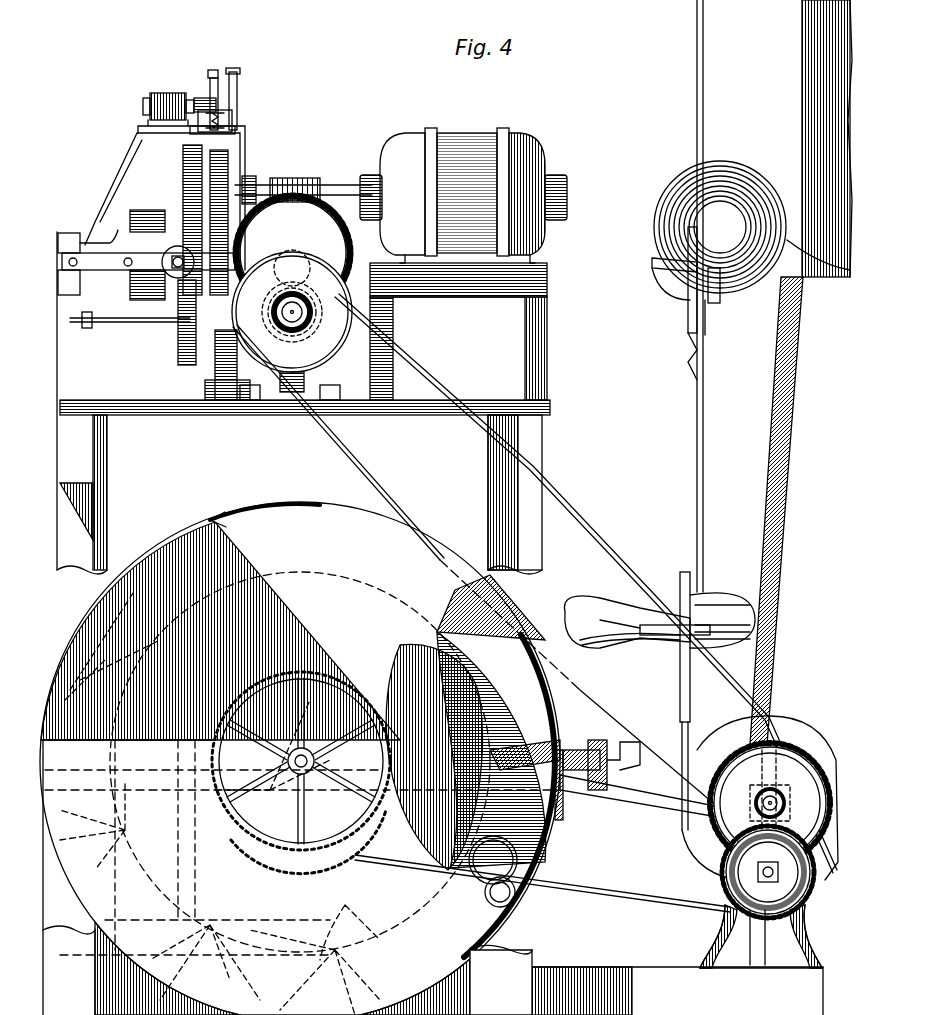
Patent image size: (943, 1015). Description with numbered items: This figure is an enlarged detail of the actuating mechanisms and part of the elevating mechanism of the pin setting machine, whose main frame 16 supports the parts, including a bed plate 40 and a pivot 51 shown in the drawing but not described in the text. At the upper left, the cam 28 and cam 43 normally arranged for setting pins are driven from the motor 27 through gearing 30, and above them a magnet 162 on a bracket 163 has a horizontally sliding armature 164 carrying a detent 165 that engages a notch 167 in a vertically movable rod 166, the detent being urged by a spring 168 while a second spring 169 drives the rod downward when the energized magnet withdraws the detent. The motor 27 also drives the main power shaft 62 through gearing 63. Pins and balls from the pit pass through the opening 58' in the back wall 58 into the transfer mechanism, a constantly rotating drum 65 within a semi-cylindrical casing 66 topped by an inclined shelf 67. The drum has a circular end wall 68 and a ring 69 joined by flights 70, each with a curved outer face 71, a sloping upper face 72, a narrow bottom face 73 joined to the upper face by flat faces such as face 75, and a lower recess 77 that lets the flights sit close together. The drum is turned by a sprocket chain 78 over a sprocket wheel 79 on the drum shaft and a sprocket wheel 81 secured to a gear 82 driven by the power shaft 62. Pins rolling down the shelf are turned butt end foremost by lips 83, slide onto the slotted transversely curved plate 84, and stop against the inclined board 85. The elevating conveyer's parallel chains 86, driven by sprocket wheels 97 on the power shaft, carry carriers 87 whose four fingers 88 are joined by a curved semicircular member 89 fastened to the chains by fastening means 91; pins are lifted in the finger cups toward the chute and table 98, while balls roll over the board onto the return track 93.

The main frame 16 is at (525, 747).
The motor 27 is at (520, 165).
The cam 28 is at (183, 178).
The gearing 30 is at (600, 618).
The bed plate 40 is at (205, 415).
The cam 43 is at (230, 185).
The pivot 51 is at (172, 278).
The back wall 58 is at (302, 802).
The opening 58' is at (322, 924).
The main power shaft 62 is at (772, 795).
The gearing 63 is at (590, 537).
The drum 65 is at (300, 758).
The semi-cylindrical casing 66 is at (148, 572).
The inclined shelf 67 is at (600, 779).
The circular end wall 68 is at (301, 777).
The ring 69 is at (347, 185).
The flights 70 is at (400, 537).
The outer face 71 is at (520, 640).
The upper face 72 is at (581, 771).
The bottom face 73 is at (545, 859).
The flat face 75 is at (500, 797).
The lower recess 77 is at (540, 867).
The sprocket chain 78 is at (652, 897).
The sprocket wheel 79 is at (262, 835).
The sprocket wheel 81 is at (765, 917).
The gear 82 is at (730, 897).
The lips 83 is at (618, 735).
The slotted transversely curved plate 84 is at (632, 795).
The inclined board 85 is at (770, 577).
The chains 86 is at (712, 482).
The carriers 87 is at (688, 300).
The fingers 88 is at (655, 265).
The curved semicircular member 89 is at (720, 300).
The fastening means 91 is at (708, 335).
The return track 93 is at (830, 282).
The sprocket wheels 97 is at (805, 725).
The table 98 is at (105, 240).
The magnet 162 is at (172, 93).
The bracket 163 is at (130, 157).
The armature 164 is at (200, 100).
The detent 165 is at (218, 80).
The rod 166 is at (214, 72).
The notch 167 is at (237, 80).
The spring 168 is at (195, 128).
The second spring 169 is at (232, 118).